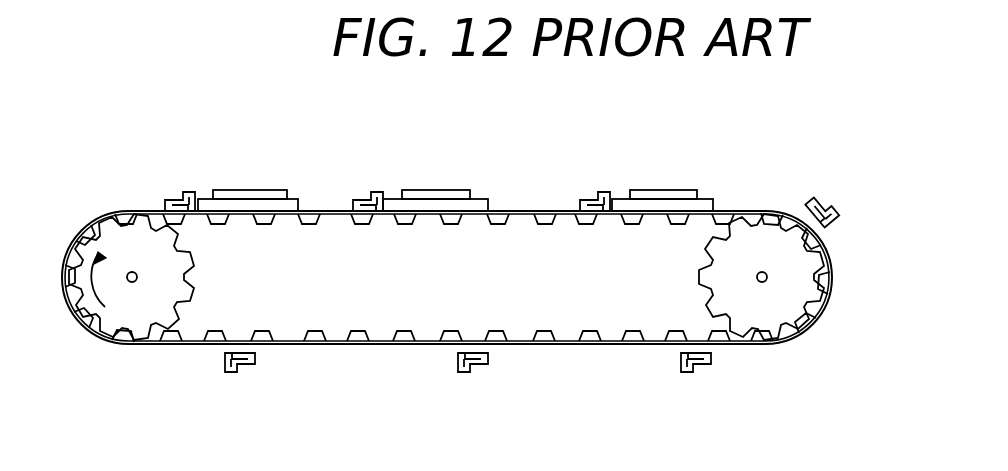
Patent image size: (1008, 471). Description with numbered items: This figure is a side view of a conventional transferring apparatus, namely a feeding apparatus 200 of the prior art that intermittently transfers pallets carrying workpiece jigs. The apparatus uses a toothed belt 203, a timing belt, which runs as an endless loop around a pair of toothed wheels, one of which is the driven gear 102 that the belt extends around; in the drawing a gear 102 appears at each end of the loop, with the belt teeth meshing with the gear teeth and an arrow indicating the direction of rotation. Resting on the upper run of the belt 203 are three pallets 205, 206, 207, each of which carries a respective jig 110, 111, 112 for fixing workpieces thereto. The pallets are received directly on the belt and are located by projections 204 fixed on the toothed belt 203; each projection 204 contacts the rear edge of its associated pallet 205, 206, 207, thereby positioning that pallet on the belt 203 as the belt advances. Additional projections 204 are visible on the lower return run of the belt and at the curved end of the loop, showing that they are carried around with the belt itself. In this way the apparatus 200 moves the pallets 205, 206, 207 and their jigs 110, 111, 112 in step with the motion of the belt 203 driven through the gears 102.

The feeding apparatus 200 is at (525, 173).
The toothed belt 203 is at (341, 345).
The driven gear 102 is at (118, 318).
The projections 204 is at (186, 188).
The jig 110 is at (271, 195).
The pallet 205 is at (250, 193).
The jig 111 is at (421, 196).
The pallet 206 is at (456, 206).
The jig 112 is at (652, 195).
The pallet 207 is at (680, 200).